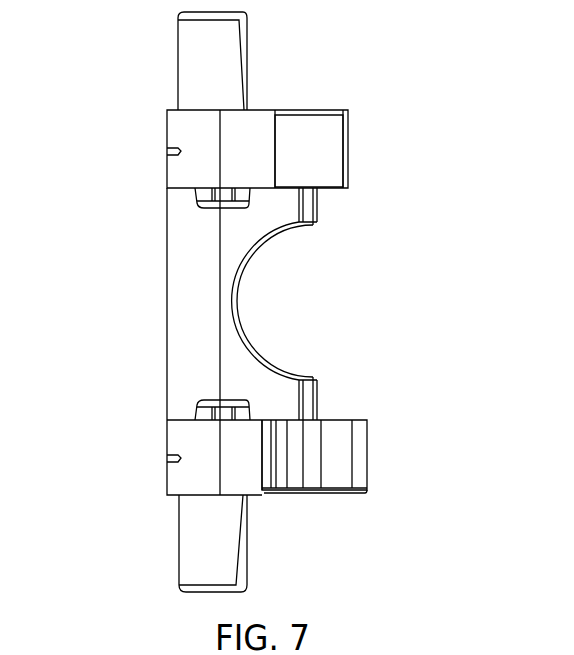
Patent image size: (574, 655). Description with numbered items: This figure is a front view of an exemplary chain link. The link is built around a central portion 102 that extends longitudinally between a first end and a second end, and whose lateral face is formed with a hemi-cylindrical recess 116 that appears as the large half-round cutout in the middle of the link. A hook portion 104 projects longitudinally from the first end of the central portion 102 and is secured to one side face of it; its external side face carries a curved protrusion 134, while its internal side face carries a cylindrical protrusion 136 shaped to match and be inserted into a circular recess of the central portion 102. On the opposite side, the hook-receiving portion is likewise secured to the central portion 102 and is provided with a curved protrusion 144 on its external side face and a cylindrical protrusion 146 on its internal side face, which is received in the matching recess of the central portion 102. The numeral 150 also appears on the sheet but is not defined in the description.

The body 102 is at (197, 282).
The upper mounting block 104 is at (193, 122).
The semicircular receiving opening 116 is at (310, 297).
The top end cap 134 is at (208, 70).
The upper nut 136 is at (190, 192).
The bottom end cap 144 is at (207, 535).
The lower nut 146 is at (198, 408).
The lower mounting block 150 is at (404, 535).